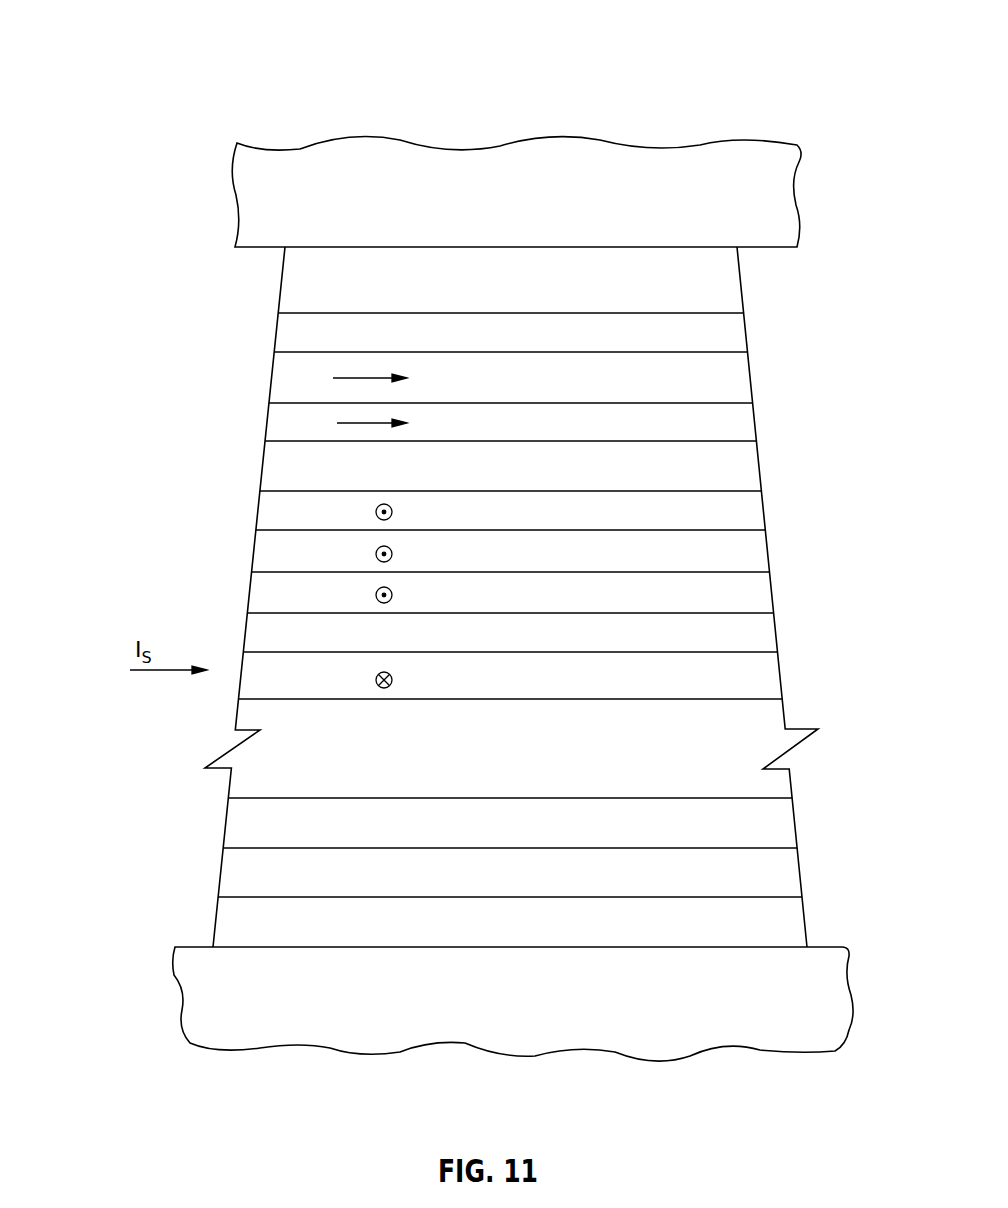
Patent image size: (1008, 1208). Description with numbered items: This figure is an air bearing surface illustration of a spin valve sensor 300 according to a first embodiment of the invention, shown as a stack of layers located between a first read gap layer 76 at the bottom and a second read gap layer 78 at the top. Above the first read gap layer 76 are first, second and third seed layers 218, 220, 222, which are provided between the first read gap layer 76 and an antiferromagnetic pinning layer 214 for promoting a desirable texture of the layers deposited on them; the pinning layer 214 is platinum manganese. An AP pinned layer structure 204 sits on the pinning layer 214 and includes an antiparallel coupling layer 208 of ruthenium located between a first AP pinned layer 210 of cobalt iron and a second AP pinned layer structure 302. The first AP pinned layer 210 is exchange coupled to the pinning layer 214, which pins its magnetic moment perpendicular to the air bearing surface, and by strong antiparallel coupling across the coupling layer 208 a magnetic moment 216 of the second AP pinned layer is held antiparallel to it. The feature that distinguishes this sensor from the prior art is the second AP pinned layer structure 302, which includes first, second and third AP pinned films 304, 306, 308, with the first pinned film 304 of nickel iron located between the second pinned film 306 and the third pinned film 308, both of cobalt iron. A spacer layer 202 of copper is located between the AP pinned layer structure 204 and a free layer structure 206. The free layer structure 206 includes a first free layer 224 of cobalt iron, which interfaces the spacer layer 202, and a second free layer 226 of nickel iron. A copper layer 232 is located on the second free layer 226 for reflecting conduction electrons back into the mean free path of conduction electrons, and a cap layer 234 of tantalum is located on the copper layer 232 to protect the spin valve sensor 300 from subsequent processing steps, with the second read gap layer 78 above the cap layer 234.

The spin valve sensor 300 is at (63, 945).
The second AP pinned layer structure 302 is at (141, 613).
The free layer structure 206 is at (188, 441).
The antiparallel (AP) pinned layer structure 204 is at (98, 491).
The second read gap layer 78 is at (783, 170).
The first read gap layer 76 is at (801, 1044).
The cap layer 234 is at (741, 281).
The copper layer 232 is at (747, 335).
The second free layer (F2) 226 is at (751, 378).
The first free layer (F1) 224 is at (755, 423).
The second seed layer (SL2) 220 is at (377, 423).
The spacer (S) layer 202 is at (760, 466).
The third AP pinned film (AP2C) 308 is at (764, 509).
The first AP pinned film (AP2A) 304 is at (768, 550).
The second AP pinned film (AP2B) 306 is at (772, 590).
The first seed layer (SL1) 218 is at (375, 512).
The antiparallel coupling (APC) layer 208 is at (777, 634).
The first AP pinned layer (AP1) 210 is at (781, 676).
The magnetic moment of the second AP pinned layer 216 is at (373, 680).
The antiferromagnetic (AFM) pinning layer 214 is at (790, 779).
The third seed layer (SL3) 222 is at (795, 821).